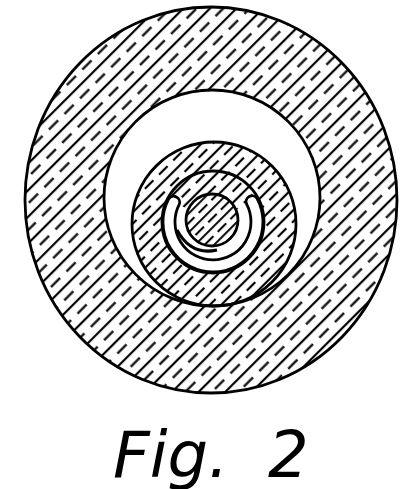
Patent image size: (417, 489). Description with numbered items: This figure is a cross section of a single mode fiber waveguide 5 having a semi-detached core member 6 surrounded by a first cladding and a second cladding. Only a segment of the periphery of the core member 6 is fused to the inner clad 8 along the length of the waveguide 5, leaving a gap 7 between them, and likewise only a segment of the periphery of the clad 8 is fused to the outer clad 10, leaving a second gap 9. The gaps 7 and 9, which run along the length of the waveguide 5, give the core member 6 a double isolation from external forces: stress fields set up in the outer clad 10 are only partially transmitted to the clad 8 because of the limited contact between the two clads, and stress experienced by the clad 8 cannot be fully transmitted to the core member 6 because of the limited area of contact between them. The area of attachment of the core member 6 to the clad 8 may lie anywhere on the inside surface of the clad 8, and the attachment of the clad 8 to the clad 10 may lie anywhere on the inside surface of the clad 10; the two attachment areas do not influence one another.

The waveguide 5 is at (220, 133).
The core member 6 is at (233, 183).
The gap 7 is at (208, 268).
The clad 8 is at (283, 232).
The gap 9 is at (292, 155).
The clad 10 is at (337, 67).